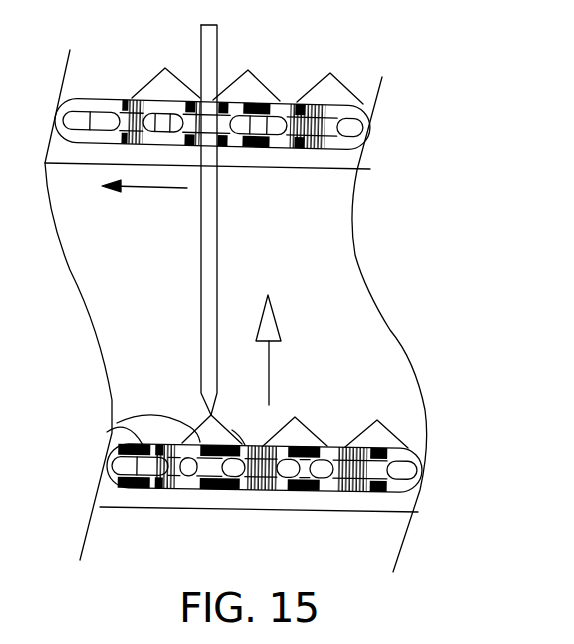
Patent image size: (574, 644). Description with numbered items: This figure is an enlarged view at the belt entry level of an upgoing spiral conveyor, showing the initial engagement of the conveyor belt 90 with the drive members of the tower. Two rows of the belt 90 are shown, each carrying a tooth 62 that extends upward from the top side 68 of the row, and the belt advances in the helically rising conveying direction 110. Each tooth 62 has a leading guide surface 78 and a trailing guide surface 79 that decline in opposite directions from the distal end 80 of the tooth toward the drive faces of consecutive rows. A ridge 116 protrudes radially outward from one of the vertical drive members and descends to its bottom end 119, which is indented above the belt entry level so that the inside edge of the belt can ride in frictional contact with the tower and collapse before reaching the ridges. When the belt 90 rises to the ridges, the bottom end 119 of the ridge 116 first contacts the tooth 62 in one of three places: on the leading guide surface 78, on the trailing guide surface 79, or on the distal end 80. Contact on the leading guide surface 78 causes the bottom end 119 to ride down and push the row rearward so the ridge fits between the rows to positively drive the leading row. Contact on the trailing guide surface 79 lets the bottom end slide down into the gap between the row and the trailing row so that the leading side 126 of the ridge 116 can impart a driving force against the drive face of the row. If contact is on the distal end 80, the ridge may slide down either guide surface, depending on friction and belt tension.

The tooth 62 is at (239, 494).
The top side 68 is at (103, 437).
The leading guide surface 78 is at (107, 432).
The trailing guide surface 79 is at (242, 493).
The distal end 80 is at (211, 415).
The conveyor belt 90 is at (307, 490).
The conveying direction 110 is at (147, 189).
The ridge 116 is at (213, 280).
The bottom end 119 is at (211, 415).
The leading side 126 is at (200, 307).